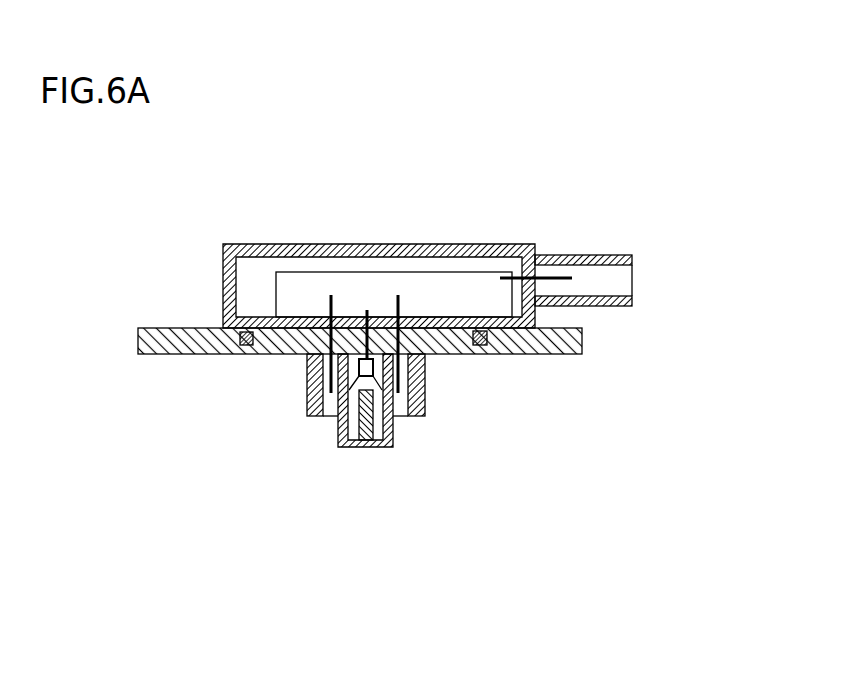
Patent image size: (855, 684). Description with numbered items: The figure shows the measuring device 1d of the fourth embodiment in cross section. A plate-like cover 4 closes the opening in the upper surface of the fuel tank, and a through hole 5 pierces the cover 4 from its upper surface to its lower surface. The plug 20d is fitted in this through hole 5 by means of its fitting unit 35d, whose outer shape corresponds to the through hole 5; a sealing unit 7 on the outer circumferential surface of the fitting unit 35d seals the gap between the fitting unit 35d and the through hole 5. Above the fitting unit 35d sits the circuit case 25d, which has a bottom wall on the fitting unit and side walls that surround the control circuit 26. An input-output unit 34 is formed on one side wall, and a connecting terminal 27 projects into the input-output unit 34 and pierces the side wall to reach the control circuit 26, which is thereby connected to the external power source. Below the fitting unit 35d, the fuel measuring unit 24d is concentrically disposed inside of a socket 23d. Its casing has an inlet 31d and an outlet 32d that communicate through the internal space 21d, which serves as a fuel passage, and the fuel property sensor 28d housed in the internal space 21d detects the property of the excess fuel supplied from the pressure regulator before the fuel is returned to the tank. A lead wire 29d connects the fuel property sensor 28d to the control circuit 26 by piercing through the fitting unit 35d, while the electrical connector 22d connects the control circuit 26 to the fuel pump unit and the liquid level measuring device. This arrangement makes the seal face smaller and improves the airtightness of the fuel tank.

The measuring device 1d is at (177, 240).
The cover 4 is at (138, 343).
The through hole 5 is at (463, 354).
The sealing unit 7 is at (197, 328).
The plug 20d is at (463, 355).
The internal space 21d is at (393, 444).
The electrical connector 22d is at (307, 367).
The socket 23d is at (420, 416).
The fuel measuring unit 24d is at (340, 437).
The circuit case 25d is at (533, 250).
The control circuit 26 is at (428, 295).
The connecting terminal 27 is at (563, 279).
The fuel property sensor 28d is at (337, 417).
The lead wire 29d is at (367, 312).
The inlet 31d is at (355, 438).
The outlet 32d is at (383, 438).
The input-output unit 34 is at (607, 257).
The fitting unit 35d is at (267, 315).